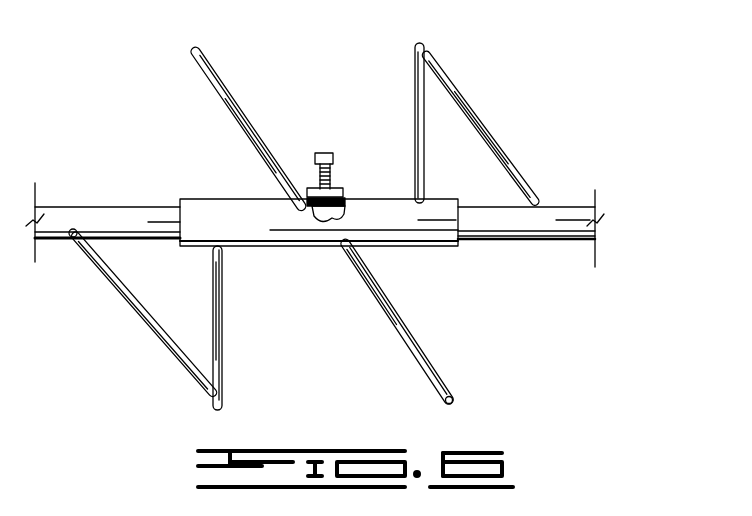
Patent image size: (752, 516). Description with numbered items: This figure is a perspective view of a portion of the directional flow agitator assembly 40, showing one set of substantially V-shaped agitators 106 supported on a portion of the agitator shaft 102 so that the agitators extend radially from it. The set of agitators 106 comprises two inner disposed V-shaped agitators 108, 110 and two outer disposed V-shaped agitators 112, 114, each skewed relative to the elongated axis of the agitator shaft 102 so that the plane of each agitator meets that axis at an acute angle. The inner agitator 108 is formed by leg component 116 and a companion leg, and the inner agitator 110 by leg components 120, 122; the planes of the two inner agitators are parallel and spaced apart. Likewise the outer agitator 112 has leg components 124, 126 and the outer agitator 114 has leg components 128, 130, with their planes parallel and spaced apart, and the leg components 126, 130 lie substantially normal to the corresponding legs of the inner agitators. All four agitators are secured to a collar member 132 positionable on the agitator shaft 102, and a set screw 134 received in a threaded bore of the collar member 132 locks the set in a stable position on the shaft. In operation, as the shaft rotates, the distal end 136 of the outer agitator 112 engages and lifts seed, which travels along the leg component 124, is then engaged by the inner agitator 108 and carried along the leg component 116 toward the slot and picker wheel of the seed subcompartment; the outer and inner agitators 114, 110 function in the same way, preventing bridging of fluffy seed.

The directional flow agitator assembly 40 is at (606, 84).
The agitator shaft 102 is at (76, 210).
The set of substantially V-shaped agitators 106 is at (456, 107).
The inner disposed V-shaped agitator 108 is at (218, 128).
The inner disposed V-shaped agitator 110 is at (433, 322).
The outer disposed V-shaped agitator 112 is at (254, 328).
The outer disposed V-shaped agitator 114 is at (493, 128).
The leg component 116 is at (222, 101).
The leg component 120 is at (455, 400).
The leg component 122 is at (378, 290).
The leg component 124 is at (124, 313).
The leg component 126 is at (222, 290).
The leg component 128 is at (488, 138).
The leg component 130 is at (413, 96).
The collar member 132 is at (458, 215).
The set screw 134 is at (334, 170).
The distal end 136 is at (53, 265).